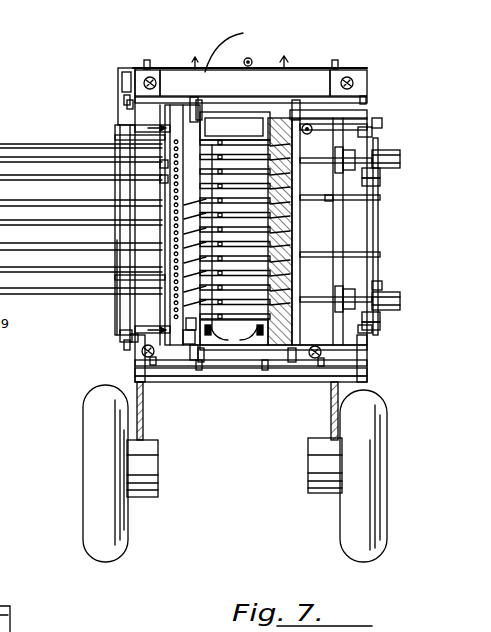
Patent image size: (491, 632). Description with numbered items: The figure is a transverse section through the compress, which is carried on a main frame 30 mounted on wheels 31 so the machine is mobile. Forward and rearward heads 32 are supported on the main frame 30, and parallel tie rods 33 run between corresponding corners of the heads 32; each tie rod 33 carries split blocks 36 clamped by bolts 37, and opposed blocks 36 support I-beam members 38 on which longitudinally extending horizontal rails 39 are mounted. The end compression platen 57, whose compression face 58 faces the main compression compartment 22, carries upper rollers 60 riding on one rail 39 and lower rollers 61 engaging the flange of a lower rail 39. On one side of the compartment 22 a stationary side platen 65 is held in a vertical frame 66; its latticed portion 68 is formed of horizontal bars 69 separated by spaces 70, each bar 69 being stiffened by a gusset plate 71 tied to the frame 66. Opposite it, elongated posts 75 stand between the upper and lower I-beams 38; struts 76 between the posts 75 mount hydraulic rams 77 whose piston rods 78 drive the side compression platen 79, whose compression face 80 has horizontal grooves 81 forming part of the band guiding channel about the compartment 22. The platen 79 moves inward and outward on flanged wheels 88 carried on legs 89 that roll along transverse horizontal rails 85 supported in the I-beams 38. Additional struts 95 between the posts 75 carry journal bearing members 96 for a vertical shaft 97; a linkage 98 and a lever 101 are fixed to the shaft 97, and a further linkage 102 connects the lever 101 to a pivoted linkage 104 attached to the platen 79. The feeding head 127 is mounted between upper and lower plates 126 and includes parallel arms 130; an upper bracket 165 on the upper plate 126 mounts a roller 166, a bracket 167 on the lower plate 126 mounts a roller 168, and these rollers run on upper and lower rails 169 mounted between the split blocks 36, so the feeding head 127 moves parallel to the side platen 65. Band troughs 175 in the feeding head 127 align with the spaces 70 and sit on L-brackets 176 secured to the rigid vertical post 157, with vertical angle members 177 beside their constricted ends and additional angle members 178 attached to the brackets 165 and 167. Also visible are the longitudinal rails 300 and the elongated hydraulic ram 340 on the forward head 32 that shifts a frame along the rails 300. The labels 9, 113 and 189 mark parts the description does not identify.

The connector block 9 is at (181, 336).
The main compression compartment 22 is at (264, 384).
The main frame 30 is at (143, 428).
The wheels 31 is at (83, 455).
The heads 32 is at (181, 69).
The tie rods 33 is at (127, 104).
The split blocks 36 is at (153, 76).
The bolts 37 is at (147, 60).
The I-beam members 38 is at (283, 97).
The horizontal rails 39 is at (198, 100).
The end compression platen 57 is at (240, 125).
The compression face 58 is at (223, 130).
The upper rollers 60 is at (325, 105).
The lower rollers 61 is at (199, 372).
The stationary side platen 65 is at (176, 194).
The vertical frame 66 is at (192, 331).
The latticed portion 68 is at (160, 216).
The horizontal bars 69 is at (176, 218).
The spaces 70 is at (184, 238).
The gusset plate 71 is at (184, 260).
The elongated posts 75 is at (348, 264).
The struts 76 is at (350, 160).
The hydraulic rams 77 is at (398, 156).
The piston rods 78 is at (316, 158).
The side compression platen 79 is at (278, 120).
The compression face 80 is at (262, 172).
The horizontal grooves 81 is at (285, 276).
The transverse horizontal rails 85 is at (372, 130).
The flanged wheels 88 is at (311, 124).
The legs 89 is at (300, 176).
The additional struts 95 is at (380, 172).
The journal bearing members 96 is at (380, 182).
The vertical shaft 97 is at (379, 232).
The linkage 98 is at (382, 124).
The lever 101 is at (380, 198).
The further linkage 102 is at (333, 210).
The pivoted linkage 104 is at (326, 198).
The lower block 113 is at (234, 338).
The upper and lower plates 126 is at (135, 128).
The feeding head 127 is at (12, 620).
The parallel arms 130 is at (192, 108).
The rigid vertical post 157 is at (160, 164).
The upper bracket 165 is at (118, 72).
The roller 166 is at (126, 72).
The bracket 167 is at (120, 332).
The roller 168 is at (130, 340).
The rails 169 is at (124, 100).
The band trough 175 is at (48, 200).
The L-brackets 176 is at (157, 153).
The vertical angle members 177 is at (164, 179).
The additional angle members 178 is at (116, 290).
The rod 189 is at (212, 190).
The longitudinal rails 300 is at (243, 33).
The elongated hydraulic ram 340 is at (200, 63).